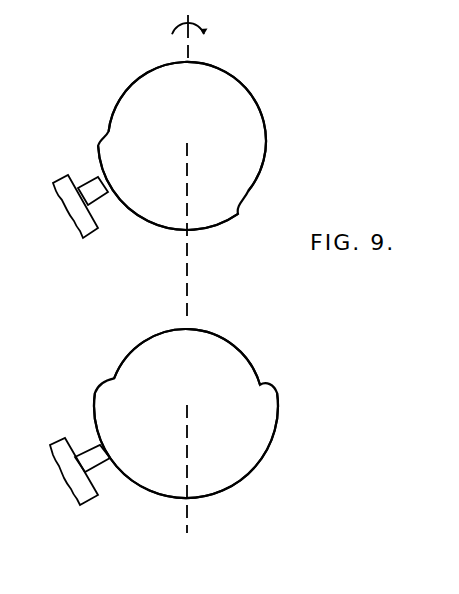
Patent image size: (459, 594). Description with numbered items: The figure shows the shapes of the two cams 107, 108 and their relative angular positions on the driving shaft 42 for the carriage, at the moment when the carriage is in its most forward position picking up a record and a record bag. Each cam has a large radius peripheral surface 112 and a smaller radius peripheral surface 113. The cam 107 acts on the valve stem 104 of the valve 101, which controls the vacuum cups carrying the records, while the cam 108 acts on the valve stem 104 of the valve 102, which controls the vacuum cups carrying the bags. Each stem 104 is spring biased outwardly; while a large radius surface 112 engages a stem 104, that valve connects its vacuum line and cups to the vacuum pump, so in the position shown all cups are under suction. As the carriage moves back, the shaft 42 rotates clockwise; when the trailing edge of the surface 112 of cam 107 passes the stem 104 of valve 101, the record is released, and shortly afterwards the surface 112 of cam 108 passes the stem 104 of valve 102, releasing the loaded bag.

The driving shaft 42 is at (192, 265).
The vacuum valve 101 is at (82, 223).
The vacuum valve 102 is at (83, 490).
The valve stem 104 is at (92, 192).
The cam 107 is at (212, 80).
The cam 108 is at (233, 367).
The large radius peripheral surface 112 is at (148, 225).
The smaller radius peripheral surface 113 is at (257, 98).